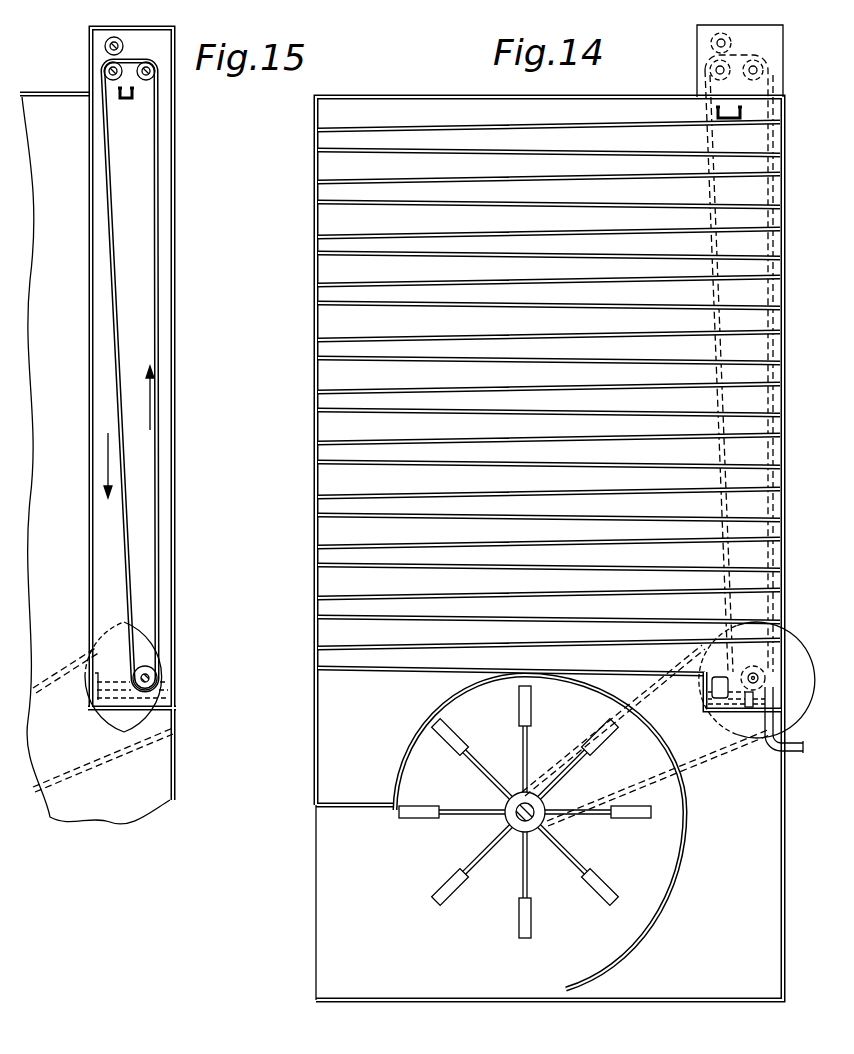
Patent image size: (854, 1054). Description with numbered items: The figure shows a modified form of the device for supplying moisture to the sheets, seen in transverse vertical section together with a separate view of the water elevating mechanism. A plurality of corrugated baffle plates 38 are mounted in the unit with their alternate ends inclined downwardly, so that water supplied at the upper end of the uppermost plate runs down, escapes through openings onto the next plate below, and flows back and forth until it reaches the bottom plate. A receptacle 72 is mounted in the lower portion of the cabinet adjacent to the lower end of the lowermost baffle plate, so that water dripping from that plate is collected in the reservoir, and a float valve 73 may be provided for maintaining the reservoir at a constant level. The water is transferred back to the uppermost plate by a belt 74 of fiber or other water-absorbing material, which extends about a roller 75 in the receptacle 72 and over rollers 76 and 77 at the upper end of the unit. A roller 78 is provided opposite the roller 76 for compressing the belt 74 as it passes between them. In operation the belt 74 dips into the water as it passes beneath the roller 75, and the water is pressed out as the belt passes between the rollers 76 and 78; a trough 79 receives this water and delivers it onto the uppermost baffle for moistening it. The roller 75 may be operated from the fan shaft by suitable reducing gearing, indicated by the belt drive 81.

In FIG. 14, the baffle plates 38 is at (330, 253).
In FIG. 14, the receptacle 72 is at (704, 698).
In FIG. 15, the receptacle 72 is at (95, 708).
In FIG. 14, the float valve 73 is at (720, 707).
In FIG. 15, the belt 74 is at (160, 455).
In FIG. 14, the roller 75 is at (746, 670).
In FIG. 15, the roller 75 is at (152, 680).
In FIG. 14, the roller 76 is at (709, 71).
In FIG. 15, the roller 76 is at (104, 70).
In FIG. 14, the roller 77 is at (762, 64).
In FIG. 15, the roller 77 is at (155, 76).
In FIG. 14, the roller 78 is at (719, 33).
In FIG. 15, the roller 78 is at (113, 37).
In FIG. 14, the trough 79 is at (732, 120).
In FIG. 15, the trough 79 is at (133, 98).
In FIG. 14, the belt drive 81 is at (695, 768).
In FIG. 15, the belt drive 81 is at (102, 758).